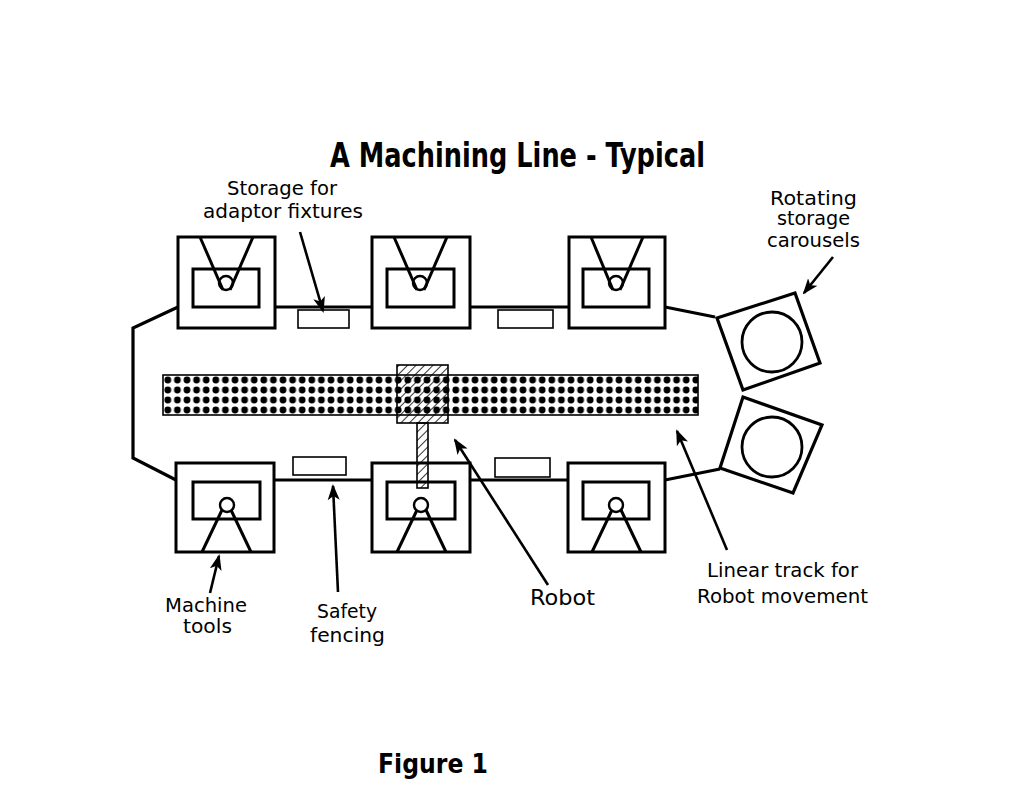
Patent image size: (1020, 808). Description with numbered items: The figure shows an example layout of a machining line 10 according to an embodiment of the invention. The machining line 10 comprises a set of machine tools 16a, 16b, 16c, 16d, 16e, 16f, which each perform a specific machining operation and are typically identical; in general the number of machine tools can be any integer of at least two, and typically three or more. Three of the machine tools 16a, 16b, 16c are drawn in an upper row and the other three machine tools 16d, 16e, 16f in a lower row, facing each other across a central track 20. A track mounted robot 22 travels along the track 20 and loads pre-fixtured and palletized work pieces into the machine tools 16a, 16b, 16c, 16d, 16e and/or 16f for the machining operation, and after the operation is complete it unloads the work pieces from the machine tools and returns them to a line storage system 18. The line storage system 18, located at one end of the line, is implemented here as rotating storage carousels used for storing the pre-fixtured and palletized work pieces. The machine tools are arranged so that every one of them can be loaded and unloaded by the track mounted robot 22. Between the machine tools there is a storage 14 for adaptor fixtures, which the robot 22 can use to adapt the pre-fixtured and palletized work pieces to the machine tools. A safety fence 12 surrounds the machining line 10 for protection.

The machining line 10 is at (254, 106).
The safety fence 12 is at (131, 388).
The storage for adaptor fixtures 14 is at (320, 329).
The machine tool 16a is at (178, 255).
The machine tool 16b is at (471, 263).
The machine tool 16c is at (655, 263).
The machine tool 16d is at (178, 515).
The machine tool 16e is at (423, 553).
The machine tool 16f is at (612, 553).
The line storage system 18 is at (810, 322).
The track 20 is at (635, 378).
The track mounted robot 22 is at (417, 366).